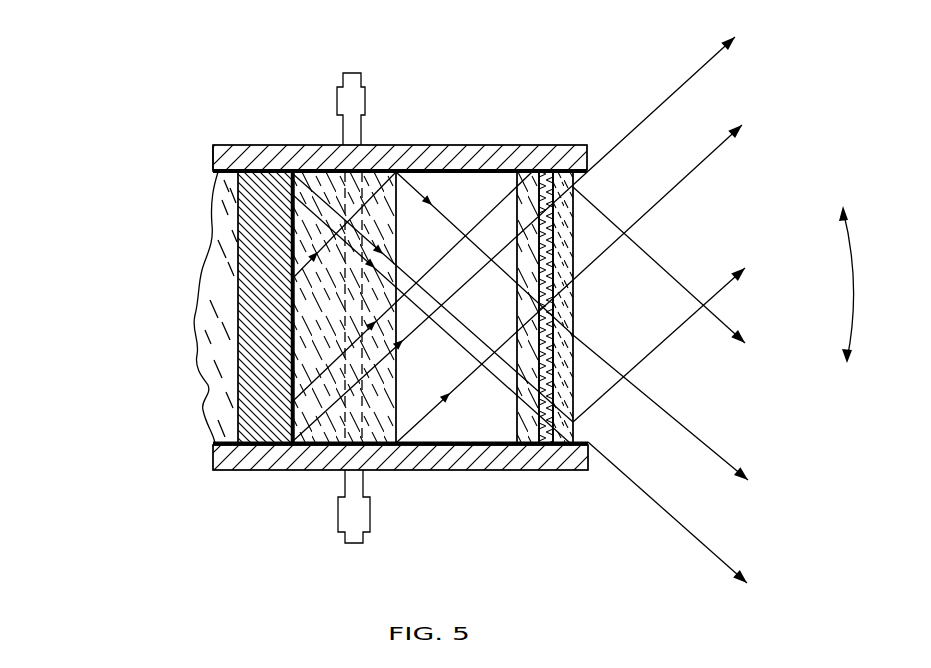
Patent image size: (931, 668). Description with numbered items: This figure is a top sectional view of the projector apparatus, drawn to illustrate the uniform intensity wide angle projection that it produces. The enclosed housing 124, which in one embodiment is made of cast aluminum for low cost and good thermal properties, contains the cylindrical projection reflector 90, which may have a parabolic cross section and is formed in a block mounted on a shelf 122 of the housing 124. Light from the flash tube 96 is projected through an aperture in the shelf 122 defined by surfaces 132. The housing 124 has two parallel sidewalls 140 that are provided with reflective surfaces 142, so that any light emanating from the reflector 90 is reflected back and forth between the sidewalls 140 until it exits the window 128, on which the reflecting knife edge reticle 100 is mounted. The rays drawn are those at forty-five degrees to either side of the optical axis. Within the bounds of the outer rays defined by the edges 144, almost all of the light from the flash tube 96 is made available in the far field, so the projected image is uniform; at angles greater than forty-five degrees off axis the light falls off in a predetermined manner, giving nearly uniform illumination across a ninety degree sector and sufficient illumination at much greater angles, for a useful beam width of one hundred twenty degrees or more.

The cylindrical projection reflector 90 is at (272, 418).
The flash tube 96 is at (335, 513).
The reflecting knife edge reticle 100 is at (550, 298).
The shelf 122 is at (332, 321).
The housing 124 is at (232, 144).
The window 128 is at (574, 302).
The surfaces 132 is at (513, 303).
The sidewalls 140 is at (482, 140).
The reflective surfaces 142 is at (202, 347).
The edges 144 is at (588, 172).